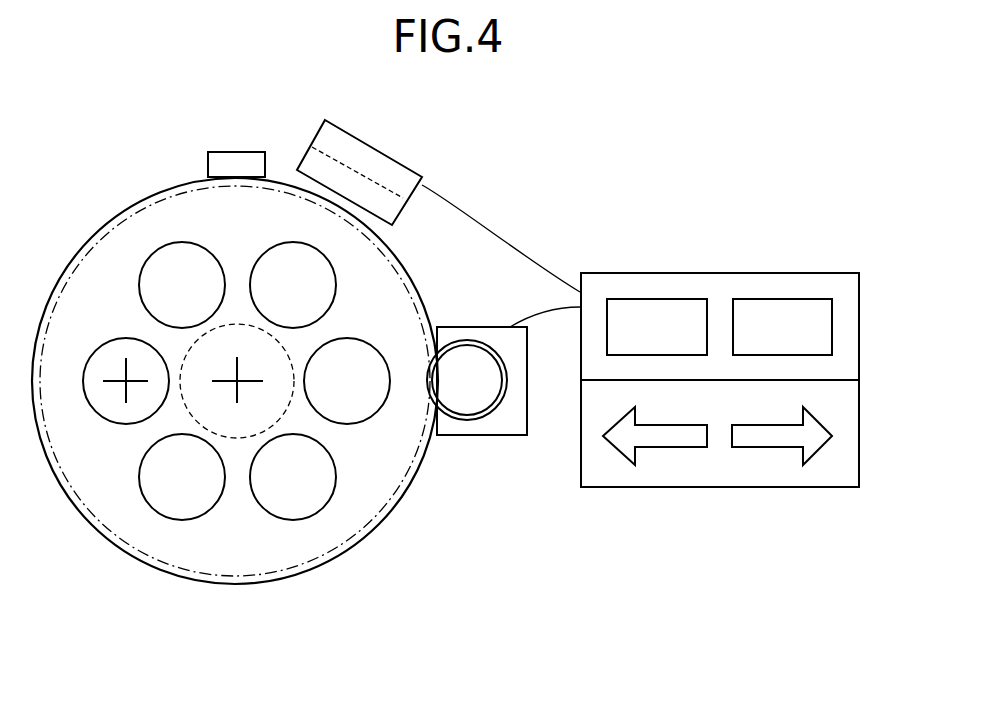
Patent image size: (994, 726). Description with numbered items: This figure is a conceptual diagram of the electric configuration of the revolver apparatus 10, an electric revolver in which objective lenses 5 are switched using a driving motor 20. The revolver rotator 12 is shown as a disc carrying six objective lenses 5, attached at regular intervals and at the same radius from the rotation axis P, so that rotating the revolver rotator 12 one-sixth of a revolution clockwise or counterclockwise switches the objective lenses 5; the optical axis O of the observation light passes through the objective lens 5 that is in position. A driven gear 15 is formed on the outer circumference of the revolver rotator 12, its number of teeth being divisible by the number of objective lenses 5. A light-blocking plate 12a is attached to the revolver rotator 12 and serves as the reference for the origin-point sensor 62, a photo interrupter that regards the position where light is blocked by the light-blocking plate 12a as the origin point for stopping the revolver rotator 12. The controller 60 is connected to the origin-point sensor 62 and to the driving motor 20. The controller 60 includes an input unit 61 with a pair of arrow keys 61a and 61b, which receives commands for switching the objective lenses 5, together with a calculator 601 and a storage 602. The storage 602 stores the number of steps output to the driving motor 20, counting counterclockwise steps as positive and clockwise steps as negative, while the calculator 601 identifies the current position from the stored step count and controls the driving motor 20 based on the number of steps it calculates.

The objective lens 5 is at (138, 285).
The revolver apparatus 10 is at (505, 158).
The revolver rotator 12 is at (187, 575).
The light-blocking plate 12a is at (240, 160).
The driven gear 15 is at (328, 563).
The driving motor 20 is at (478, 437).
The controller 60 is at (722, 271).
The calculator 601 is at (658, 297).
The storage 602 is at (787, 298).
The input unit 61 is at (713, 488).
The arrow key 61a is at (653, 448).
The arrow key 61b is at (782, 448).
The origin-point sensor 62 is at (385, 162).
The optical axis O is at (125, 390).
The rotation axis P is at (237, 392).